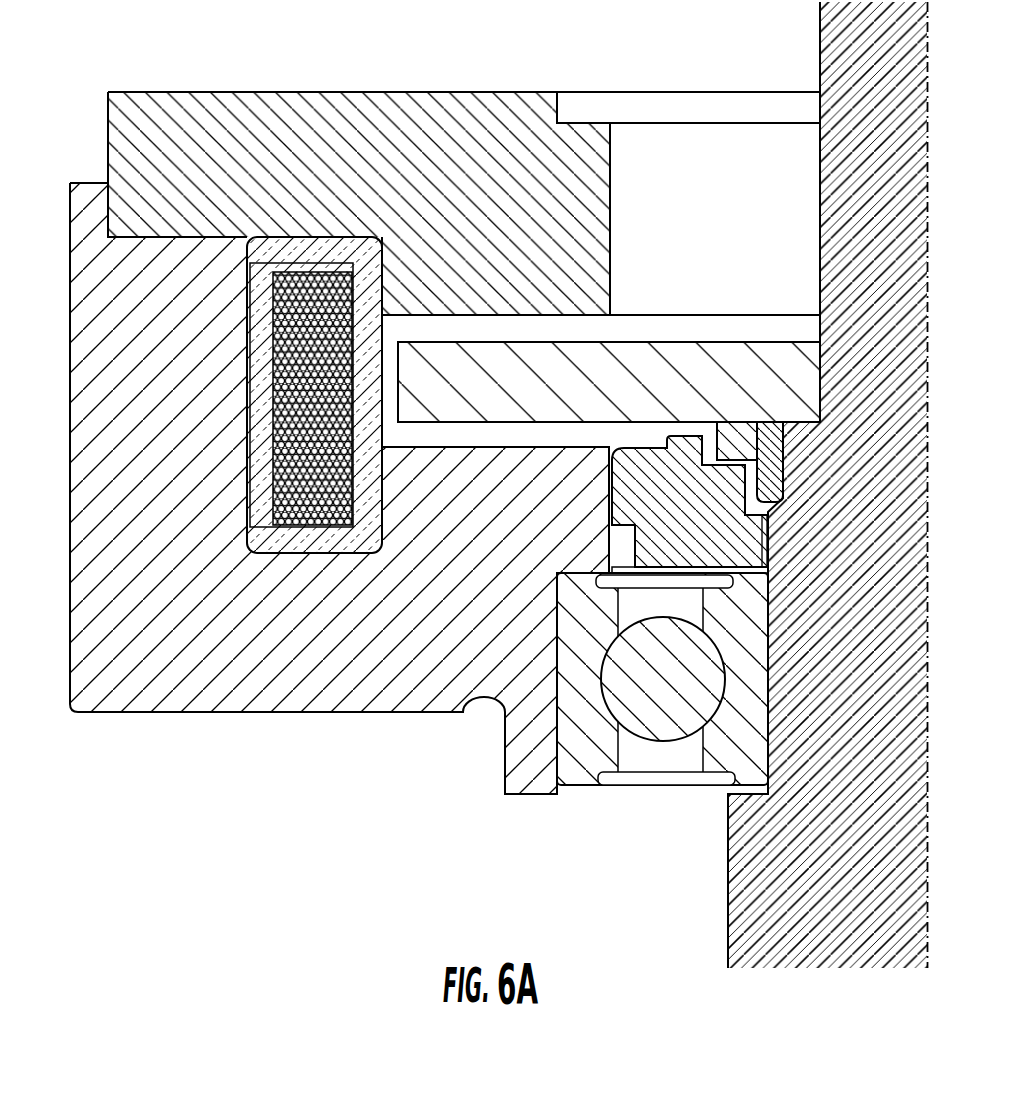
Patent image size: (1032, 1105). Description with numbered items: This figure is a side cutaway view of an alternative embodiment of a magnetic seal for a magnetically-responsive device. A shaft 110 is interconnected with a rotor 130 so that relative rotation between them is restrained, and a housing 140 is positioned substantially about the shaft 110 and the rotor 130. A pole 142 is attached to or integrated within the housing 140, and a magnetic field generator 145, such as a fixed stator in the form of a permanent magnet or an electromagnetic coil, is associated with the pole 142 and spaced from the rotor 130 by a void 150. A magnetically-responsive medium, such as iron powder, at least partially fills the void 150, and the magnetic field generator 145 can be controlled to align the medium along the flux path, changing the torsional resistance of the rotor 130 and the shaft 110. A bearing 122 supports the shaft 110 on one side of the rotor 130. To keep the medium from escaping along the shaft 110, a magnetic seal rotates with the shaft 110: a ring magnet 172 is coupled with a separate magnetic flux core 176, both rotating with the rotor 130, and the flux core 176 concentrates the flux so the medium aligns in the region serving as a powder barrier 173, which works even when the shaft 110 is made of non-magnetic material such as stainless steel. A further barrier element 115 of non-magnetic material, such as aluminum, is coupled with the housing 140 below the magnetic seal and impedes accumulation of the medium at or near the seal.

The shaft 110 is at (758, 865).
The barrier element 115 is at (737, 530).
The bearing 122 is at (658, 750).
The rotor 130 is at (675, 350).
The housing 140 is at (419, 410).
The pole 142 is at (291, 110).
The magnetic field generator 145 is at (360, 538).
The void 150 is at (532, 445).
The ring magnet 172 is at (742, 425).
The powder barrier 173 is at (703, 437).
The magnetic flux core 176 is at (782, 460).